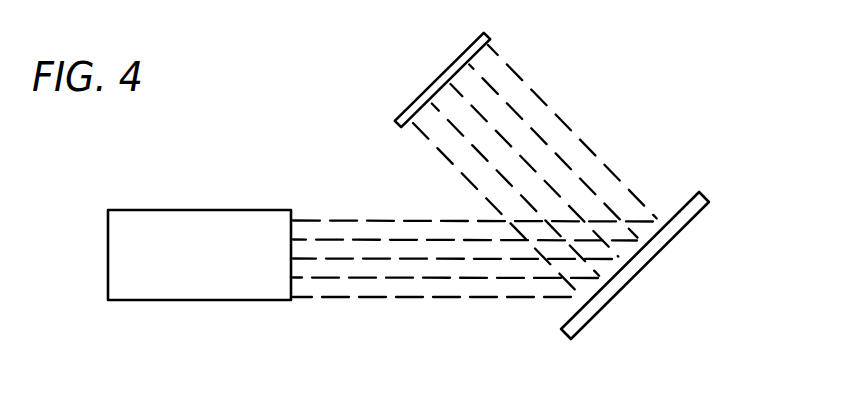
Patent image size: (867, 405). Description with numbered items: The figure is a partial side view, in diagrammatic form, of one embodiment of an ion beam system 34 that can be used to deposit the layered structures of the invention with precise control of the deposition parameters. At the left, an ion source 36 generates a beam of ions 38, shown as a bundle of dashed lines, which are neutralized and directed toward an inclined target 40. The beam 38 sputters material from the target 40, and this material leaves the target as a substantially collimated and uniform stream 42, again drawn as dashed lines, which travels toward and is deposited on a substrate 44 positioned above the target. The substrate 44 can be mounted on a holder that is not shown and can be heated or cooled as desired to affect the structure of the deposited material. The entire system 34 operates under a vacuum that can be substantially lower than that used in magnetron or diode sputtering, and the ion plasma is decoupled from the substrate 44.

The ion beam system 34 is at (318, 192).
The ion source 36 is at (188, 263).
The beam of ions 38 is at (457, 292).
The target 40 is at (643, 260).
The stream 42 is at (590, 162).
The substrate 44 is at (443, 83).